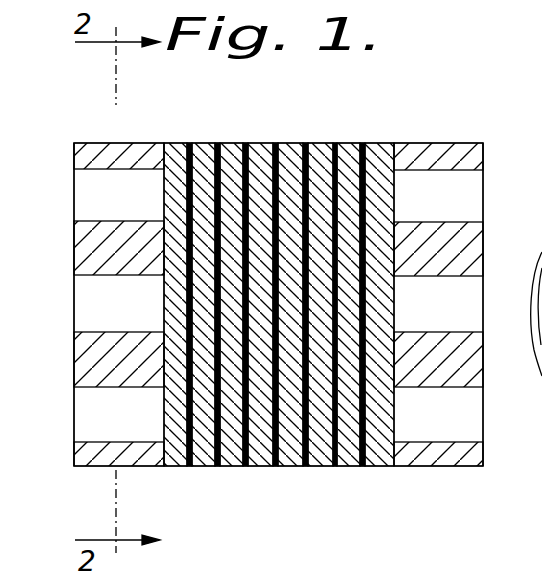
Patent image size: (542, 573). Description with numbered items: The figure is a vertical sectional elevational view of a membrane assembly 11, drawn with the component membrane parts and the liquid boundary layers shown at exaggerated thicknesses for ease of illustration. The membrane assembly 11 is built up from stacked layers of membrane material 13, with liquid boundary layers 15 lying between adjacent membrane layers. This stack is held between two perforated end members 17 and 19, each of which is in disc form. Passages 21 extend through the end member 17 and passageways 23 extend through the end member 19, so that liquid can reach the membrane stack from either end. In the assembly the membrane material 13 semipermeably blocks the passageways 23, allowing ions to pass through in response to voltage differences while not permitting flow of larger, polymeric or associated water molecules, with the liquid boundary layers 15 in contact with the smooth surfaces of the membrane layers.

The membrane assembly 11 is at (324, 474).
The membrane material layers 13 is at (292, 143).
The liquid boundary layers 15 is at (378, 113).
The perforated end member 17 is at (468, 279).
The perforated end member 19 is at (89, 279).
The passages 21 is at (453, 332).
The passageways 23 is at (97, 222).